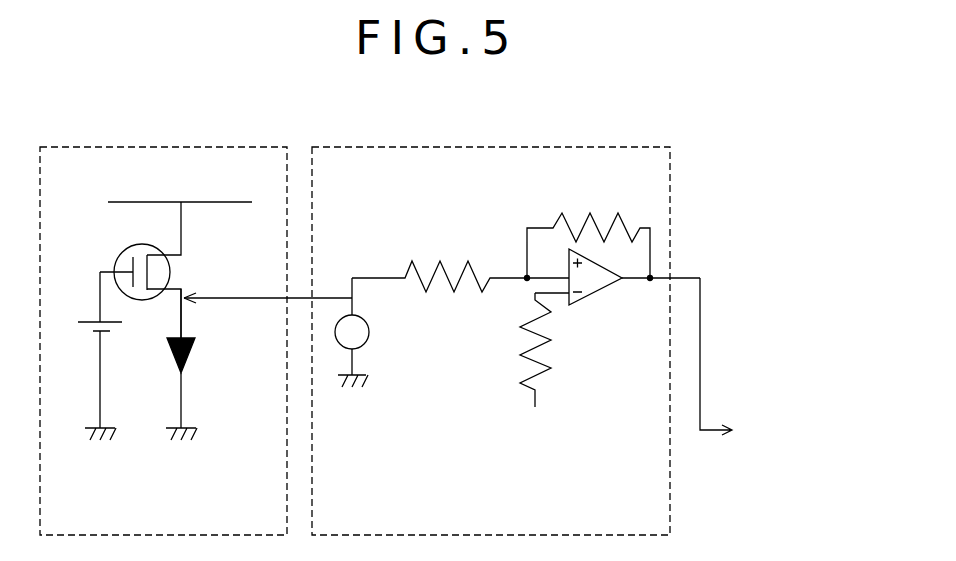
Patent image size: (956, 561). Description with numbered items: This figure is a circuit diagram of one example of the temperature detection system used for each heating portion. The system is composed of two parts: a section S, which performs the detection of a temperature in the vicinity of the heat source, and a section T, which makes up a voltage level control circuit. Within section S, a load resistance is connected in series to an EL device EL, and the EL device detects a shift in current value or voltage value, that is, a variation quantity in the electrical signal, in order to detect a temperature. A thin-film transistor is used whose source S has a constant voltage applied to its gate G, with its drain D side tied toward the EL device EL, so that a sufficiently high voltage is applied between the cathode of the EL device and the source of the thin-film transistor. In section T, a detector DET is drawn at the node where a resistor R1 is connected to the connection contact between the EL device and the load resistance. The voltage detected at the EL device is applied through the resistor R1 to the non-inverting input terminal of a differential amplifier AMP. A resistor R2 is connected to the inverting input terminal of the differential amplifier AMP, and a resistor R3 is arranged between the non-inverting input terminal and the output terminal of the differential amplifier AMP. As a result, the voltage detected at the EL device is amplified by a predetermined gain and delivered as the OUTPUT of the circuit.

The section S is at (165, 147).
The section T is at (590, 147).
The gate G is at (174, 270).
The drain of transistor D is at (194, 313).
The EL device EL is at (197, 383).
The detector (voltmeter) DET is at (379, 332).
The resistor R1 is at (439, 262).
The resistor R2 is at (552, 350).
The resistor R3 is at (588, 230).
The differential amplifier AMP is at (613, 286).
The output terminal OUTPUT is at (762, 360).